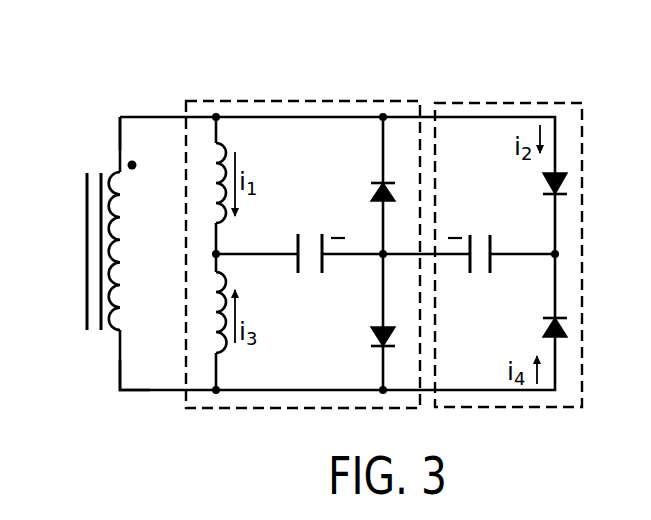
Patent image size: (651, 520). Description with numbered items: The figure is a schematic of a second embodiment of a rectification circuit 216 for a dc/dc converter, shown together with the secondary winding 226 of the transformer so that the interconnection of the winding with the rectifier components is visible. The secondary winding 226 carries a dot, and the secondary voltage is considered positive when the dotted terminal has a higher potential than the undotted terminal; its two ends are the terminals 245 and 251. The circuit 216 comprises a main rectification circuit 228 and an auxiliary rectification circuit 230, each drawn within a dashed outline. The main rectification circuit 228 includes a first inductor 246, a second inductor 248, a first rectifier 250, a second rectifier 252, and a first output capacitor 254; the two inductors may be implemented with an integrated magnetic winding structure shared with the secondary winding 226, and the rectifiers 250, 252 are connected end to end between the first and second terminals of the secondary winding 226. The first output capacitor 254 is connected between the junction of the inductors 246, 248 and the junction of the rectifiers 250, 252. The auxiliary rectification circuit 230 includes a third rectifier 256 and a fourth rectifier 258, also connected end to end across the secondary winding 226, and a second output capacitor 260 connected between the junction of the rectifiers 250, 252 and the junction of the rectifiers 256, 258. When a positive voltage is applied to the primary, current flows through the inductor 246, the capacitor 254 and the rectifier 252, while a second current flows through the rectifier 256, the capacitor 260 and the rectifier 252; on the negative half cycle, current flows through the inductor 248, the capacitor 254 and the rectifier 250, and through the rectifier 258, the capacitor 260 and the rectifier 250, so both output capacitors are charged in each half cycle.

The rectification circuit 216 is at (111, 95).
The secondary winding 226 is at (116, 216).
The main rectification circuit 228 is at (346, 100).
The auxiliary rectification circuit 230 is at (507, 103).
The secondary winding first terminal 245 is at (119, 136).
The first inductor 246 is at (216, 144).
The second inductor 248 is at (216, 355).
The first rectifier 250 is at (372, 195).
The secondary winding second terminal 251 is at (133, 391).
The second rectifier 252 is at (372, 329).
The first output capacitor 254 is at (322, 265).
The third rectifier 256 is at (545, 186).
The fourth rectifier 258 is at (545, 331).
The second output capacitor 260 is at (493, 265).